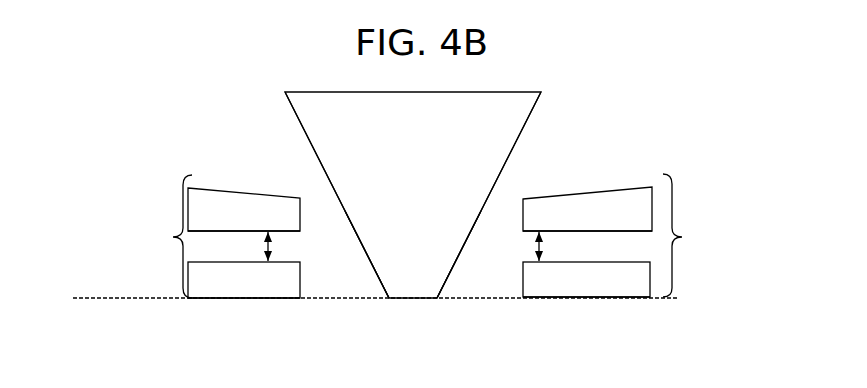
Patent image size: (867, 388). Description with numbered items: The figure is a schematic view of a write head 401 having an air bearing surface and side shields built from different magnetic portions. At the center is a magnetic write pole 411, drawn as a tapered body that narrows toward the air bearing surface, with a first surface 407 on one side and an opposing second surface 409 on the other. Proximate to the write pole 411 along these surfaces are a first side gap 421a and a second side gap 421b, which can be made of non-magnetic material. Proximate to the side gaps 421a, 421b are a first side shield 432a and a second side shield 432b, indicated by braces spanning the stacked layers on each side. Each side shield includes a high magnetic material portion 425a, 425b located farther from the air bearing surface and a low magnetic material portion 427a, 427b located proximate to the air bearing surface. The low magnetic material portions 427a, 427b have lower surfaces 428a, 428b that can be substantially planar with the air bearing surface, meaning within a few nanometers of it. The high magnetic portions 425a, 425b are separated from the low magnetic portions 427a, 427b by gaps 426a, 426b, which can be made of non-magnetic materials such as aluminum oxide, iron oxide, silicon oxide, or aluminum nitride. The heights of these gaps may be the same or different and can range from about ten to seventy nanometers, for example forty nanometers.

The write head 401 is at (610, 66).
The magnetic write pole 411 is at (430, 161).
The first side gap 421a is at (322, 205).
The second side gap 421b is at (497, 205).
The first surface 407 is at (358, 240).
The second surface 409 is at (462, 243).
The high magnetic material portion 425a is at (260, 225).
The high magnetic material portion 425b is at (620, 223).
The low magnetic material portion 427a is at (257, 290).
The low magnetic material portion 427b is at (618, 286).
The gap 426a is at (213, 245).
The gap 426b is at (630, 246).
The lower surface 428a is at (227, 300).
The lower surface 428b is at (573, 300).
The first side shield 432a is at (155, 236).
The second side shield 432b is at (700, 235).